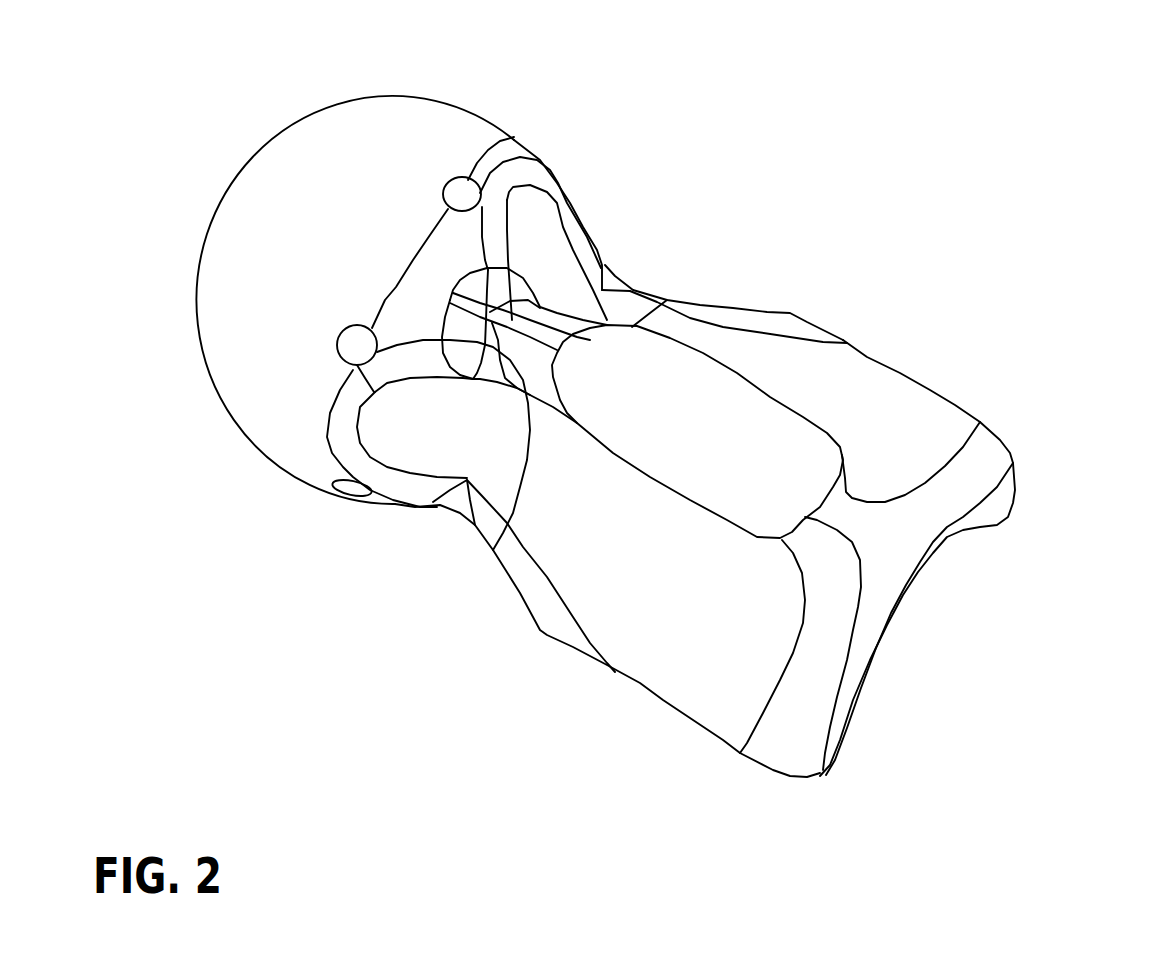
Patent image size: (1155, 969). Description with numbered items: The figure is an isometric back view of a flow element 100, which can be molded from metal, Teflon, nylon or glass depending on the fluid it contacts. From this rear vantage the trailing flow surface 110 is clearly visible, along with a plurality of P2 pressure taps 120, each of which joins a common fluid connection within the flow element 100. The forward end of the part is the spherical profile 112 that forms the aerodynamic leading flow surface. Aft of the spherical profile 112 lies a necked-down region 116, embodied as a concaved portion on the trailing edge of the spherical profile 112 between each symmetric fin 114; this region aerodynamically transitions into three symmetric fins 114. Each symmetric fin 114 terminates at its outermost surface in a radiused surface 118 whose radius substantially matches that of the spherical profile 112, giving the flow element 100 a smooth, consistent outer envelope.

The flow element 100 is at (1055, 217).
The trailing flow surface 110 is at (878, 589).
The spherical profile 112 is at (380, 118).
The symmetric fin 114 is at (638, 600).
The necked-down region 116 is at (568, 267).
The radiused surface 118 is at (737, 470).
The P2 pressure tap 120 is at (514, 137).